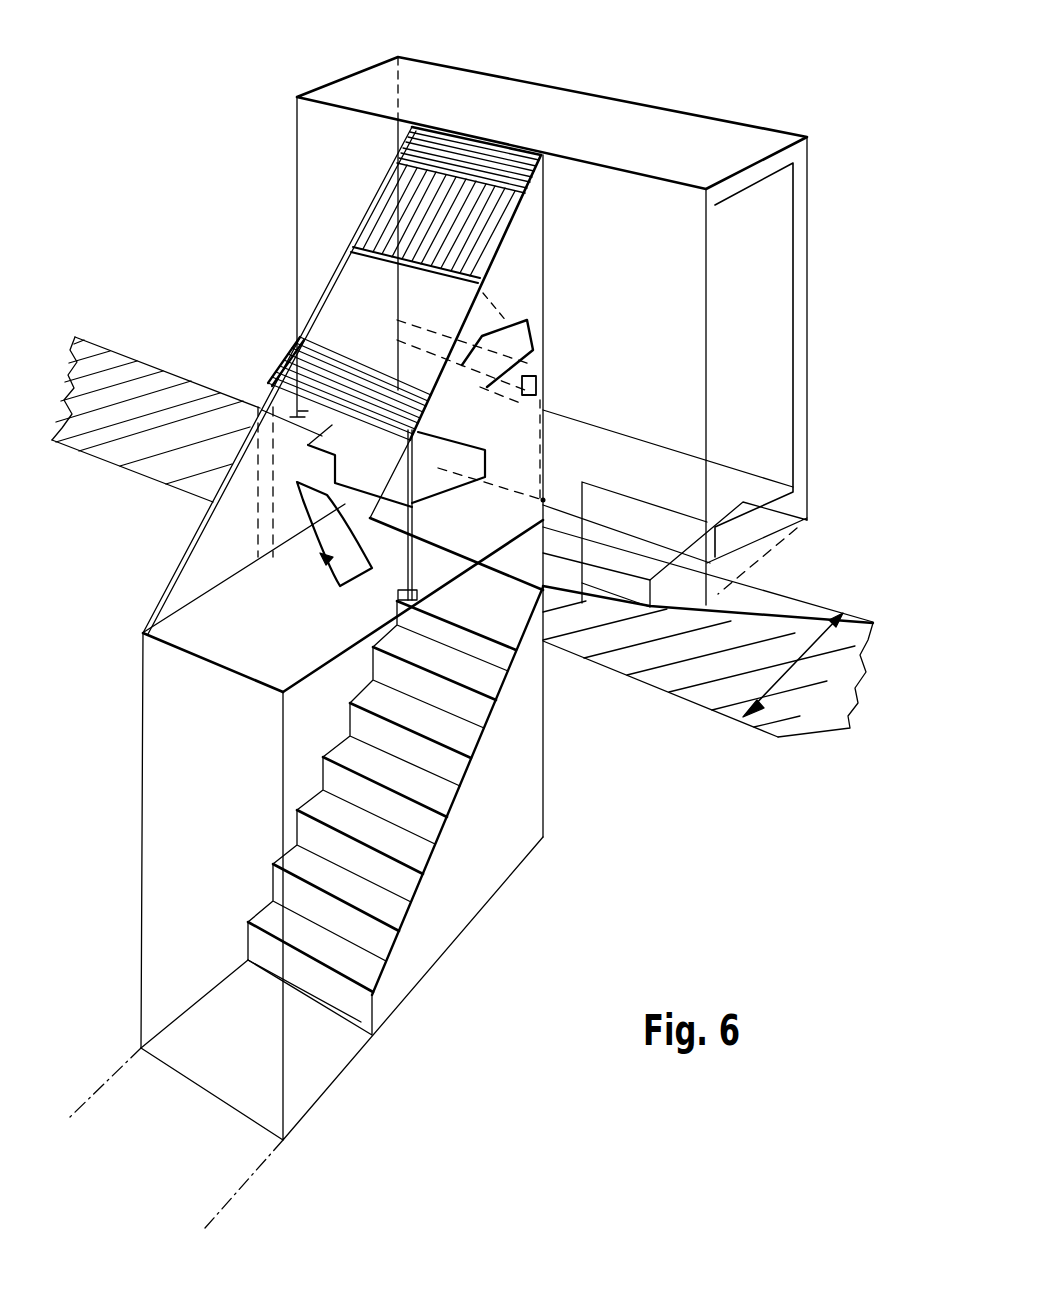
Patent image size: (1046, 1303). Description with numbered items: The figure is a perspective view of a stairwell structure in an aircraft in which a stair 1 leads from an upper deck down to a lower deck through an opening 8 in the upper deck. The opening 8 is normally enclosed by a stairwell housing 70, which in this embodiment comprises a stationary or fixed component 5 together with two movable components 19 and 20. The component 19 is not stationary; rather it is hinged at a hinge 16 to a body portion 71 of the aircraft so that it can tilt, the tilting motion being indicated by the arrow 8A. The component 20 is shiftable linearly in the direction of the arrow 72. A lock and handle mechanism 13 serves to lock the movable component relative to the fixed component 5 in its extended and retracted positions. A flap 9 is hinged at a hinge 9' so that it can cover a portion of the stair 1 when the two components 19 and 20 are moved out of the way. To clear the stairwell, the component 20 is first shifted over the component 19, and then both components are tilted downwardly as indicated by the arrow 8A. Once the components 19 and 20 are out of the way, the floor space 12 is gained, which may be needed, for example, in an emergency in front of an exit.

The stair 1 is at (485, 868).
The stationary or fixed housing component 5 is at (573, 103).
The opening 8 is at (245, 655).
The arrow 8A is at (334, 528).
The flap 9 is at (507, 353).
The hinge 9' is at (538, 518).
The floor space 12 is at (825, 640).
The lock and handle mechanism 13 is at (540, 384).
The hinge 16 is at (143, 636).
The movable component 19 is at (200, 556).
The movable or positionable component 20 is at (280, 368).
The stairwell housing 70 is at (273, 192).
The body portion 71 is at (160, 846).
The arrow 72 is at (524, 322).